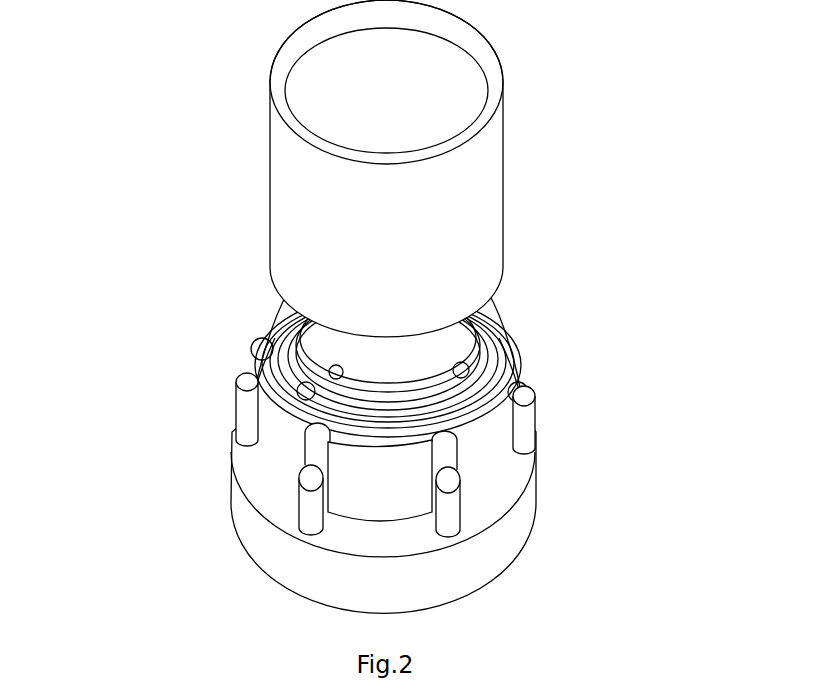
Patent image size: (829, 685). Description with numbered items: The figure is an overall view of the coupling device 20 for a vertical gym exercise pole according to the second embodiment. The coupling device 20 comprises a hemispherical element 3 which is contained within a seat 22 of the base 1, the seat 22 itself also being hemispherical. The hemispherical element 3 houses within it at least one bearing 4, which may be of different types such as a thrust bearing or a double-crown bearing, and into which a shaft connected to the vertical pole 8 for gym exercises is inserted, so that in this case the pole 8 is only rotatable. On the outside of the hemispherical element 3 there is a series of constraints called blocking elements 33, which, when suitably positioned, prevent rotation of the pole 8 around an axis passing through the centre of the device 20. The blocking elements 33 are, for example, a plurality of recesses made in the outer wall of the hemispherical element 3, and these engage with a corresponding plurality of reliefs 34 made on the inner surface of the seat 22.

The base 1 is at (507, 542).
The hemispherical element 3 is at (468, 368).
The bearing 4 is at (305, 380).
The vertical pole 8 is at (437, 232).
The coupling device 20 is at (396, 325).
The seat 22 is at (440, 412).
The blocking elements 33 is at (310, 455).
The reliefs 34 is at (455, 505).